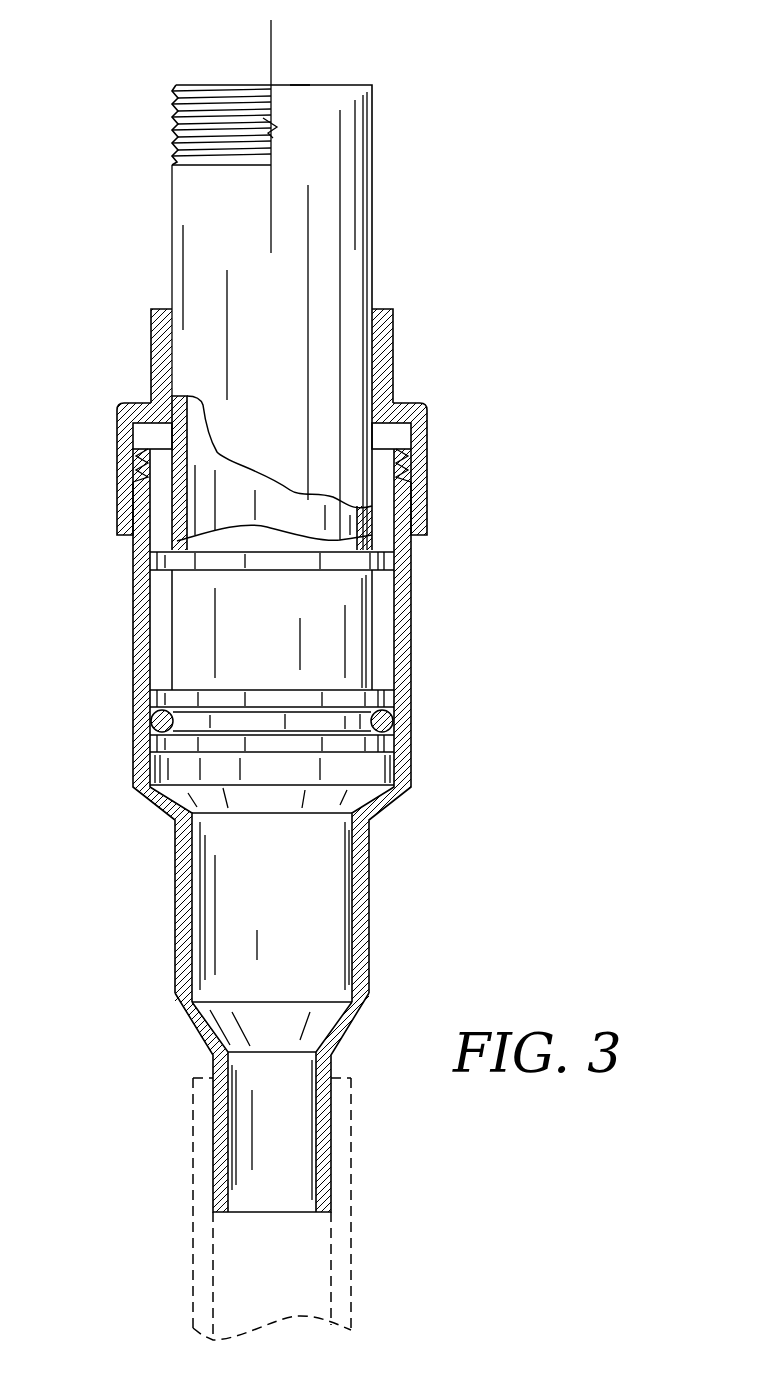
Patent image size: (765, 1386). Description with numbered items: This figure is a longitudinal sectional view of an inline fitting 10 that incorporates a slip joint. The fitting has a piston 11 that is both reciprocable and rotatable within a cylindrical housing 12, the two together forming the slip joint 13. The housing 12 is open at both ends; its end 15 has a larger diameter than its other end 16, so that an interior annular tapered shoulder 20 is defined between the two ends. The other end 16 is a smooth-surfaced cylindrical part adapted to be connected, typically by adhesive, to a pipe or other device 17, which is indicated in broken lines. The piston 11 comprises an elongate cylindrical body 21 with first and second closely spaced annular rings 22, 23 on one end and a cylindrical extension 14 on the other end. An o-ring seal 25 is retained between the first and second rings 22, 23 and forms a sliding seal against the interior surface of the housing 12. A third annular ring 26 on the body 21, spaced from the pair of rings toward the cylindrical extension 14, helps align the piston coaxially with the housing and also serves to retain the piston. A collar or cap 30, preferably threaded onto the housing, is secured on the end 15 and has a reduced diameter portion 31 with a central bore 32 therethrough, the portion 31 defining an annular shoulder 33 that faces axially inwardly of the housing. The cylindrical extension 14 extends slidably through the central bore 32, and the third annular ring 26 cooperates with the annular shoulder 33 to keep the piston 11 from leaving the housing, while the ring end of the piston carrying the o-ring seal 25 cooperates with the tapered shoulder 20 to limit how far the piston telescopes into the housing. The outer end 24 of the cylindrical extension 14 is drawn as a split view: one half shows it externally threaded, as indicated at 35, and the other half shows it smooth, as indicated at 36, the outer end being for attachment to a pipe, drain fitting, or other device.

The inline fitting 10 is at (285, 670).
The piston 11 is at (377, 612).
The cylindrical housing 12 is at (218, 830).
The slip joint 13 is at (286, 830).
The cylindrical extension 14 is at (271, 275).
The end of the housing 15 is at (411, 432).
The other end of the housing 16 is at (213, 1108).
The pipe or other device 17 is at (350, 1286).
The interior annular tapered shoulder 20 is at (178, 782).
The elongate cylindrical body 21 is at (168, 477).
The first annular ring 22 is at (150, 745).
The second annular ring 23 is at (150, 705).
The outer end of the cylindrical extension 24 is at (297, 85).
The o-ring seal 25 is at (152, 722).
The third annular ring 26 is at (157, 559).
The collar or cap 30 is at (268, 434).
The reduced diameter portion 31 is at (394, 342).
The central bore 32 is at (188, 333).
The annular shoulder 33 is at (175, 442).
The external threads 35 is at (172, 108).
The smooth surface 36 is at (341, 113).